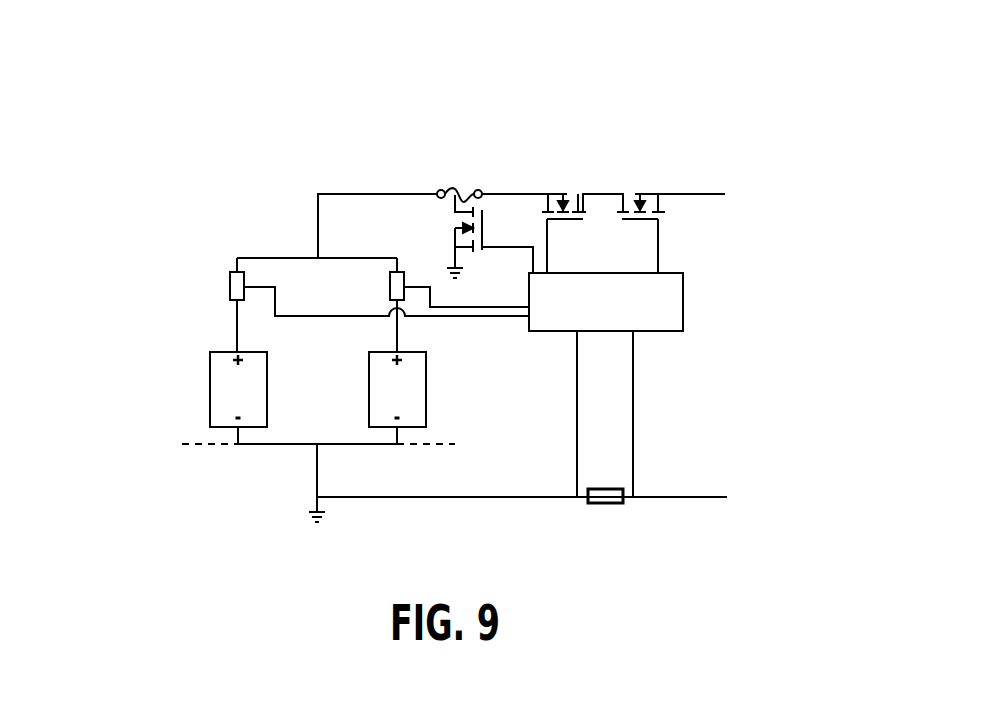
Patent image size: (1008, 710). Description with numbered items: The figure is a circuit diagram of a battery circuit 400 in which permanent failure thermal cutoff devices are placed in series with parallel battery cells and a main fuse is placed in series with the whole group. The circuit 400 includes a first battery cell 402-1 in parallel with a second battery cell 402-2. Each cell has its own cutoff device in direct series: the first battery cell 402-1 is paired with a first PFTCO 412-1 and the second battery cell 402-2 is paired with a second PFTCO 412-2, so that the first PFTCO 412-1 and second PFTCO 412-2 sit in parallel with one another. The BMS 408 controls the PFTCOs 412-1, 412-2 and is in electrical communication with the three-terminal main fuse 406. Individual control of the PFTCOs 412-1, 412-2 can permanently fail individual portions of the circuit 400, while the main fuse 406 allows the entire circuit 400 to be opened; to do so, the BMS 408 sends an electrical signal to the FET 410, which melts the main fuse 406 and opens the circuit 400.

The circuit 400 is at (743, 134).
The main fuse 406 is at (451, 182).
The FET 410 is at (441, 246).
The first PFTCO 412-1 is at (230, 281).
The second PFTCO 412-2 is at (390, 287).
The first battery cell 402-1 is at (210, 387).
The second battery cell 402-2 is at (497, 395).
The BMS 408 is at (606, 302).